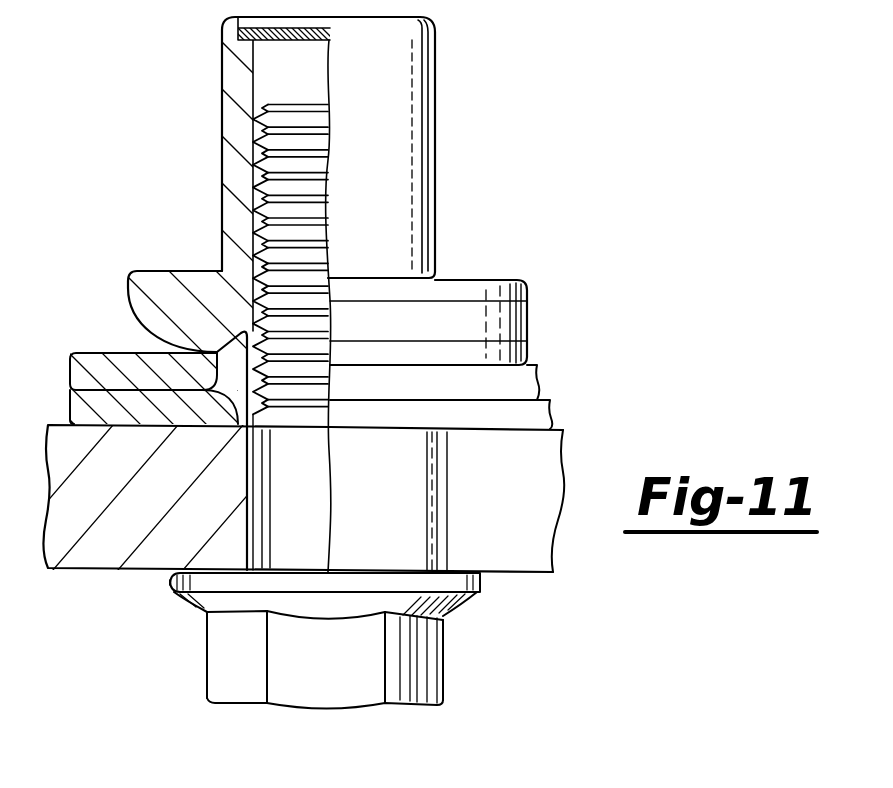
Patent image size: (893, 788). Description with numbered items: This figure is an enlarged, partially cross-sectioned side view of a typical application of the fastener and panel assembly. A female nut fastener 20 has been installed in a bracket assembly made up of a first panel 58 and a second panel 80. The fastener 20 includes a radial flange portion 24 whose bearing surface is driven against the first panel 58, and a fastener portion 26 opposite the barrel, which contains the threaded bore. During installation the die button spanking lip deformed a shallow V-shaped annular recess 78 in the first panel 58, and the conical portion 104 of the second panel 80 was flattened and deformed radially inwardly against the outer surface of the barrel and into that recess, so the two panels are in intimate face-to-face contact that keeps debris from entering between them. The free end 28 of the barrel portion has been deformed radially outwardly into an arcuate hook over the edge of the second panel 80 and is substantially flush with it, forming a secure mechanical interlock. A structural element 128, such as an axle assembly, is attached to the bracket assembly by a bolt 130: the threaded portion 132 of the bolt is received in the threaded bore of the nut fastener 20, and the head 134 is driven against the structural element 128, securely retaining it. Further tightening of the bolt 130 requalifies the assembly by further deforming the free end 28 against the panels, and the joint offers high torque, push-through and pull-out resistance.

The fastener 20 is at (502, 200).
The radial flange portion 24 is at (188, 295).
The fastener portion 26 is at (387, 118).
The free end of the barrel portion 28 is at (258, 412).
The first panel 58 is at (110, 380).
The shallow V-shaped annular recess 78 is at (128, 290).
The second panel 80 is at (67, 412).
The conical portion of the second panel 104 is at (152, 426).
The structural element 128 is at (508, 494).
The bolt 130 is at (462, 689).
The threaded portion of the bolt 132 is at (282, 258).
The head of the bolt 134 is at (445, 620).